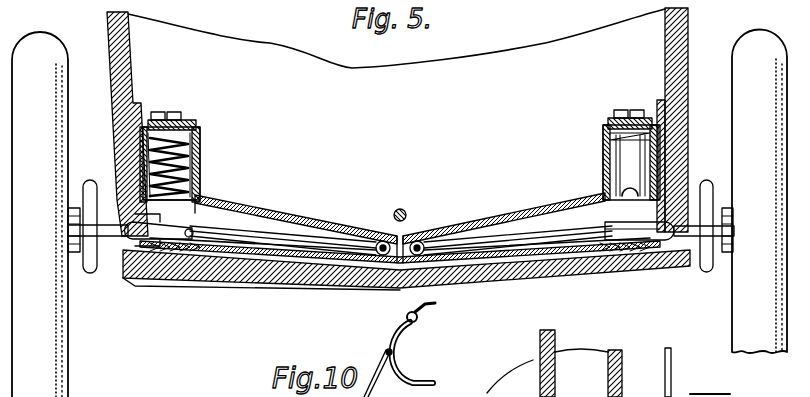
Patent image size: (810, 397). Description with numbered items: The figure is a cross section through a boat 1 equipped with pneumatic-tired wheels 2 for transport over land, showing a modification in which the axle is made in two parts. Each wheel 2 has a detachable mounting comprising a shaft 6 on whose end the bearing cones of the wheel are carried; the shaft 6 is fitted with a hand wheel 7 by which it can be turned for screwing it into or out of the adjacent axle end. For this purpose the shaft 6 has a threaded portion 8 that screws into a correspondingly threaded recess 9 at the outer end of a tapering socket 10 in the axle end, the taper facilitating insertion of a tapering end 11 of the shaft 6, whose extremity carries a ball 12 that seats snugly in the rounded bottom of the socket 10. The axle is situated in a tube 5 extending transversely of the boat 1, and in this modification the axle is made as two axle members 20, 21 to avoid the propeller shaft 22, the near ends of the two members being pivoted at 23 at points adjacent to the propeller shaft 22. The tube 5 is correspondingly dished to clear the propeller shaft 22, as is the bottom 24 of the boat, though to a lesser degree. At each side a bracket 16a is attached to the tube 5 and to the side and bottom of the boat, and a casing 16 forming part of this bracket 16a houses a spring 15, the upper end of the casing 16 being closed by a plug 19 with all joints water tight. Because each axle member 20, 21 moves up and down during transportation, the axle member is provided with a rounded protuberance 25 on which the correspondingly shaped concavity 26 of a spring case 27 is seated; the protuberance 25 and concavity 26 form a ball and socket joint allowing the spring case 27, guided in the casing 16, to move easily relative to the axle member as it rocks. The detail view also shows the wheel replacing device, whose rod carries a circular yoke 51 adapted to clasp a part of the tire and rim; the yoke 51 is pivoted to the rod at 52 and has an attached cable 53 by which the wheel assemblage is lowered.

In FIG. 5, the boat 1 is at (685, 32).
In FIG. 5, the pneumatic-tired wheels 2 is at (60, 326).
In FIG. 5, the tube 5 is at (332, 222).
In FIG. 5, the shaft 6 is at (110, 242).
In FIG. 5, the hand wheel 7 is at (90, 274).
In FIG. 5, the threaded portion 8 is at (153, 262).
In FIG. 5, the threaded recess 9 is at (134, 262).
In FIG. 5, the tapering socket 10 is at (184, 252).
In FIG. 5, the tapering end 11 is at (171, 280).
In FIG. 5, the ball 12 is at (212, 262).
In FIG. 5, the spring 15 is at (205, 127).
In FIG. 5, the casing 16 is at (200, 137).
In FIG. 5, the bracket 16a is at (137, 115).
In FIG. 5, the plug 19 is at (180, 118).
In FIG. 5, the axle member 20 is at (253, 232).
In FIG. 5, the axle member 21 is at (515, 235).
In FIG. 5, the propeller shaft 22 is at (405, 210).
In FIG. 5, the pivot 23 is at (414, 256).
In FIG. 5, the bottom 24 is at (446, 280).
In FIG. 5, the rounded protuberance 25 is at (212, 203).
In FIG. 5, the concavity 26 is at (200, 173).
In FIG. 5, the spring case 27 is at (200, 146).
In FIG. 10, the circular yoke 51 is at (430, 383).
In FIG. 10, the pivot 52 is at (385, 352).
In FIG. 10, the cable 53 is at (425, 310).